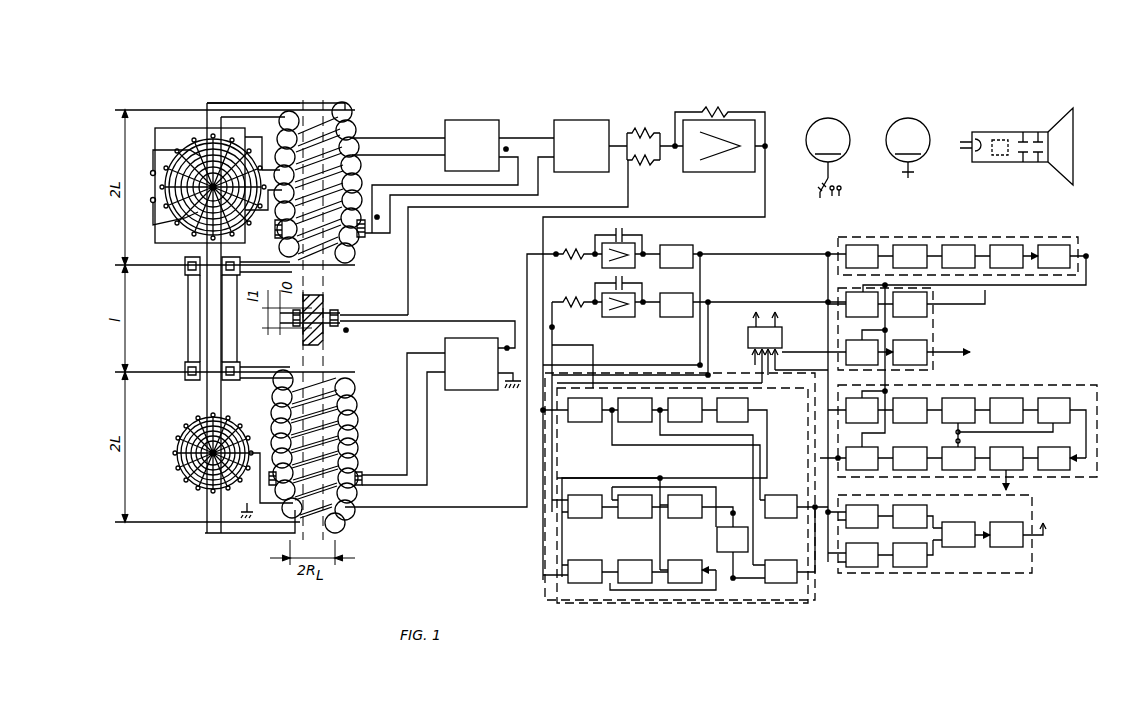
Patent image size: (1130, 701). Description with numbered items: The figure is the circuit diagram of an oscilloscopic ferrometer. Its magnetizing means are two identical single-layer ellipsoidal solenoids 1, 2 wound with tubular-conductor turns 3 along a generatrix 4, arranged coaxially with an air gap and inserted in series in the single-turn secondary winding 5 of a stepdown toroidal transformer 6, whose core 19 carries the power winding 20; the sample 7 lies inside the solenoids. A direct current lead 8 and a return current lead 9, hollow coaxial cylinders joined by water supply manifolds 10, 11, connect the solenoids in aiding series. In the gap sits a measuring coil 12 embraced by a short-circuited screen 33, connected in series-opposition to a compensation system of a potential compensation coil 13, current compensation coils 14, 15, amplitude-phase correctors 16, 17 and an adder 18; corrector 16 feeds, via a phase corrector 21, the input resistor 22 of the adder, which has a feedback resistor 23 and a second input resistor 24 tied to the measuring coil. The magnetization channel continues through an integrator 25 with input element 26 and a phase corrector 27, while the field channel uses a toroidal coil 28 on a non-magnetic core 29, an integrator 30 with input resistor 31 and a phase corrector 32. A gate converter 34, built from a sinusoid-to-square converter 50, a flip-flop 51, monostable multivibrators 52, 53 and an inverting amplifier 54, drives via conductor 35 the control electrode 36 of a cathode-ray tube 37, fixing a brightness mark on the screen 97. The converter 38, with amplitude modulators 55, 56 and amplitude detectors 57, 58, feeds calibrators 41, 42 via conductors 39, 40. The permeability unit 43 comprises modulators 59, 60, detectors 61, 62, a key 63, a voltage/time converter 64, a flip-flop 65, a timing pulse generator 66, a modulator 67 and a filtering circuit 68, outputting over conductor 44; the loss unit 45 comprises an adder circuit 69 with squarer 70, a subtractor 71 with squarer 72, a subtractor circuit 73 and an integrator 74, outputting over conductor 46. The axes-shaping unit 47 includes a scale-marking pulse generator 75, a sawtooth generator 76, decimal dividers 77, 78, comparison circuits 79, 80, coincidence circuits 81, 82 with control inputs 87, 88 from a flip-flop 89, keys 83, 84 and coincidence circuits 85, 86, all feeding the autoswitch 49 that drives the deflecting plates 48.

The ellipsoidal solenoid 1 is at (316, 256).
The ellipsoidal solenoid 2 is at (352, 522).
The turns 3 is at (357, 180).
The generatrix 4 is at (290, 112).
The single-turn secondary winding 5 is at (232, 102).
The stepdown toroidal transformer 6 is at (170, 186).
The sample 7 is at (325, 342).
The direct current lead 8 is at (232, 343).
The return current lead 9 is at (214, 385).
The water supply manifold 10 is at (186, 268).
The water supply manifold 11 is at (186, 375).
The measuring coil 12 is at (350, 331).
The potential compensation coil 13 is at (242, 222).
The current compensation coil 14 is at (366, 240).
The current compensation coil 15 is at (368, 500).
The amplitude-phase corrector of the first harmonic 16 is at (472, 145).
The amplitude-phase corrector of higher harmonics 17 is at (483, 364).
The adder 18 is at (730, 172).
The core 19 is at (163, 222).
The power winding 20 is at (164, 157).
The phase corrector 21 is at (581, 146).
The input resistor 22 is at (645, 126).
The feedback resistor 23 is at (718, 108).
The input resistor 24 is at (646, 166).
The integrator 25 is at (624, 317).
The input transistor 26 is at (570, 308).
The phase corrector 27 is at (676, 305).
The toroidal coil 28 is at (176, 464).
The non-magnetic core 29 is at (196, 484).
The integrator 30 is at (636, 248).
The input resistor 31 is at (579, 242).
The phase corrector 32 is at (676, 256).
The short-circuited screen 33 is at (297, 328).
The gate converter 34 is at (940, 238).
The conductor 35 is at (1088, 236).
The control electrode 36 is at (1008, 138).
The cathode-ray tube 37 is at (1000, 166).
The converter of instant values into DC voltage 38 is at (936, 330).
The conductor 39 is at (990, 300).
The conductor 40 is at (972, 354).
The calibrator 41 is at (806, 132).
The calibrator 42 is at (887, 132).
The unit for computation of differential magnetic permeability or susceptibility 43 is at (1030, 384).
The conductor 44 is at (1010, 480).
The unit for computation of total electromagnetic losses 45 is at (1034, 512).
The conductor 46 is at (1045, 540).
The unit for shaping an image of scale-marked coordinate axes 47 is at (780, 604).
The deflecting plates 48 is at (1040, 130).
The autoswitch 49 is at (701, 347).
The converter of sinusoidal signal into square pulse 50 is at (862, 256).
The flip-flop 51 is at (910, 256).
The monostable multivibrator 52 is at (958, 256).
The monostable multivibrator 53 is at (1006, 256).
The inverting amplifier 54 is at (1054, 256).
The amplitude modulator 55 is at (862, 304).
The amplitude modulator 56 is at (862, 352).
The amplitude detector 57 is at (910, 304).
The amplitude detector 58 is at (910, 352).
The amplitude modulator 59 is at (862, 410).
The amplitude modulator 60 is at (862, 458).
The amplitude detector 61 is at (910, 410).
The amplitude detector 62 is at (910, 458).
The key 63 is at (958, 410).
The voltage/time period converter 64 is at (1006, 410).
The flip-flop 65 is at (1054, 410).
The timing pulse generator 66 is at (1054, 458).
The amplitude modulator 67 is at (958, 458).
The filtering circuit 68 is at (1006, 458).
The adder circuit 69 is at (862, 516).
The squarer 70 is at (910, 516).
The subtractor 71 is at (862, 555).
The squarer 72 is at (910, 555).
The subtractor circuit 73 is at (958, 534).
The integrator 74 is at (1006, 534).
The scale-marking pulse generator 75 is at (585, 410).
The sawtooth generator 76 is at (732, 410).
The decimal frequency divider 77 is at (635, 410).
The decimal frequency divider 78 is at (685, 410).
The comparison circuit 79 is at (585, 506).
The comparison circuit 80 is at (585, 571).
The coincidence circuit 81 is at (635, 506).
The coincidence circuit 82 is at (635, 571).
The key 83 is at (685, 506).
The key 84 is at (685, 571).
The coincidence circuit 85 is at (781, 506).
The coincidence circuit 86 is at (781, 571).
The control input 87 is at (634, 478).
The control input 88 is at (615, 600).
The flip-flop 89 is at (732, 539).
The screen 97 is at (1075, 138).